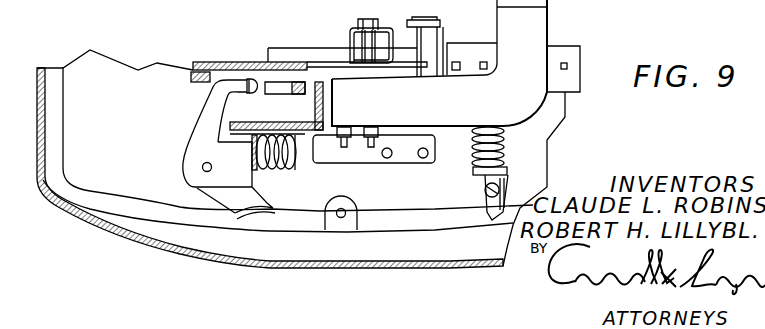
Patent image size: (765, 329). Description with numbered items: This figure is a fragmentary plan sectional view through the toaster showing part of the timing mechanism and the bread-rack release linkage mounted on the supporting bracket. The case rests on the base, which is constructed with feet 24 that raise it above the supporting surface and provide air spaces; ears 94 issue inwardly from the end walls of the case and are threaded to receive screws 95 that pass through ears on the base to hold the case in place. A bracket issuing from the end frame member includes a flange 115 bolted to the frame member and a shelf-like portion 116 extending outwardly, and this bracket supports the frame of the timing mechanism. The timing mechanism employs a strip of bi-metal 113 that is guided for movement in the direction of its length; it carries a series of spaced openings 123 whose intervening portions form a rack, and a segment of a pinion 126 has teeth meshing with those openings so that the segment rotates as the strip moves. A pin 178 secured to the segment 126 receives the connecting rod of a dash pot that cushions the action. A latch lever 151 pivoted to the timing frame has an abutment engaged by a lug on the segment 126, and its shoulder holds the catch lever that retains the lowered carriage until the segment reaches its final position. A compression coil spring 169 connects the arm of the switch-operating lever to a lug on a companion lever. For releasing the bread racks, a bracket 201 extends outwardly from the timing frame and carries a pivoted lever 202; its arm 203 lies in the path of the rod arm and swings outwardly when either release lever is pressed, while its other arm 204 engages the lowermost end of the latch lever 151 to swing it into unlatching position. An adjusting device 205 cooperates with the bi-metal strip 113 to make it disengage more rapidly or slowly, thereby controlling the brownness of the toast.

The feet 24 is at (627, 2).
The ears 94 is at (352, 207).
The screws 95 is at (337, 212).
The strip of bi-metal 113 is at (467, 50).
The flange 115 is at (538, 7).
The shelf-like portion 116 is at (519, 99).
The openings 123 is at (566, 69).
The segment of a pinion 126 is at (327, 65).
The latch lever 151 is at (276, 86).
The compression coil spring 169 is at (294, 153).
The pin 178 is at (200, 62).
The bracket 201 is at (219, 141).
The lever 202 is at (215, 193).
The arm 203 is at (253, 214).
The arm 204 is at (204, 103).
The adjusting device 205 is at (503, 152).